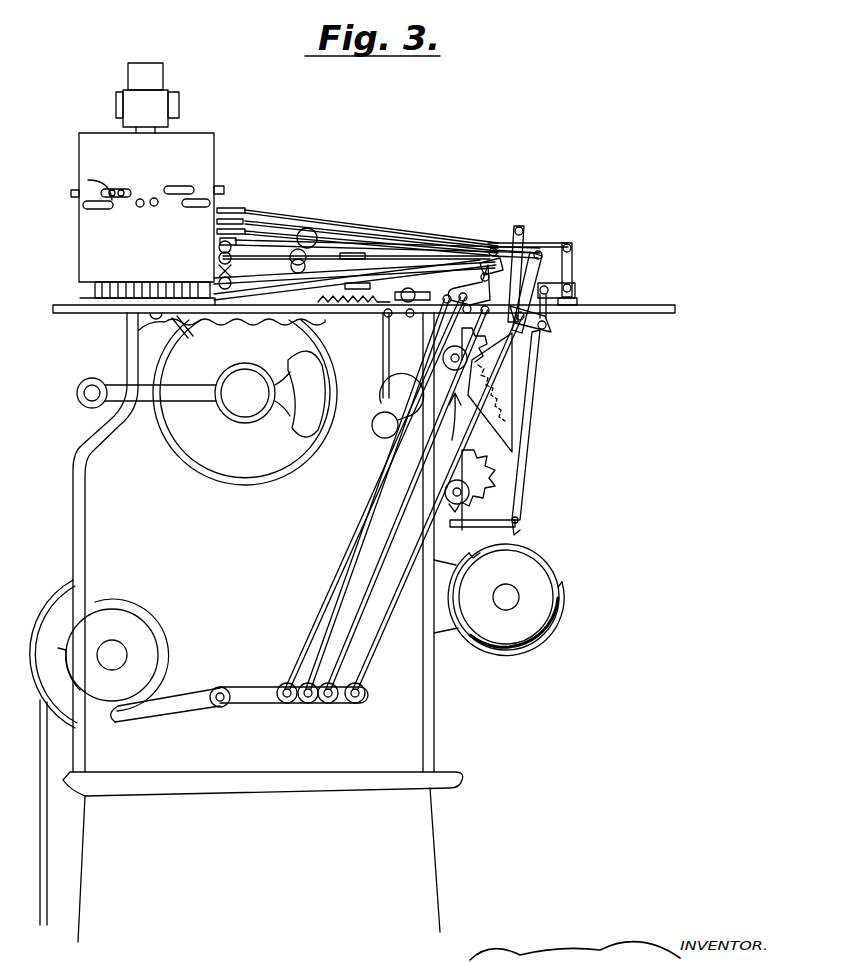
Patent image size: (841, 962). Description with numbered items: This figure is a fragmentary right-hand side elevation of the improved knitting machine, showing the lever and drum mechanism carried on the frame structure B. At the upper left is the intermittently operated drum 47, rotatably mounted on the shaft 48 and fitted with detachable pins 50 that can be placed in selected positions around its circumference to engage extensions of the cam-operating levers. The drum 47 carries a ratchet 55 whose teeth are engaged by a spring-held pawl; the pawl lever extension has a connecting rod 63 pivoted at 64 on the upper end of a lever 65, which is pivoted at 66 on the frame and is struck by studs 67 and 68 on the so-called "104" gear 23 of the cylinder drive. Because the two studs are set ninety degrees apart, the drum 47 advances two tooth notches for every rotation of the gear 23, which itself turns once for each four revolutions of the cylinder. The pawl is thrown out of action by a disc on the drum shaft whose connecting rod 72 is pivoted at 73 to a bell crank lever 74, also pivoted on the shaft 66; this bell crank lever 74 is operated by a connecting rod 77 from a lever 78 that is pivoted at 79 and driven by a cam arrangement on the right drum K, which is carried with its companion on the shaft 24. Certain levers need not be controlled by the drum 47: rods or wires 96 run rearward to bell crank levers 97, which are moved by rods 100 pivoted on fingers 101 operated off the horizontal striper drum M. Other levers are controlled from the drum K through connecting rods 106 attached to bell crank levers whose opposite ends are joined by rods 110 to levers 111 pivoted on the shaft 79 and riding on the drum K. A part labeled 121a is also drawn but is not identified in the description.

The shaft 48 is at (160, 135).
The intermittently operated drum 47 is at (205, 160).
The detachable pins 50 is at (88, 180).
The ratchet 55 is at (95, 290).
The rods or wires 96 is at (345, 225).
The connecting rod 63 is at (428, 245).
The pivot 64 is at (522, 226).
The connecting rod 72 is at (538, 250).
The pivot 73 is at (555, 252).
The bell crank levers 97 is at (575, 268).
The connecting rods 106 is at (370, 258).
The "104" gear 104 is at (484, 285).
The hanger 121a is at (398, 330).
The pivot shaft 66 is at (505, 322).
The bell crank lever 74 is at (548, 330).
The stud 67 is at (448, 406).
The lever 65 is at (500, 362).
The stud 68 is at (460, 490).
The "104" wheel 23 is at (495, 478).
The rods 100 is at (525, 513).
The fingers 101 is at (480, 522).
The rods 110 is at (375, 518).
The horizontal striper drum M is at (540, 572).
The frame structure B is at (92, 528).
The shaft 24 is at (115, 652).
The right drum K is at (142, 652).
The connecting rod 77 is at (380, 602).
The pivot shaft 79 is at (222, 708).
The levers 111 is at (295, 712).
The lever 78 is at (330, 703).